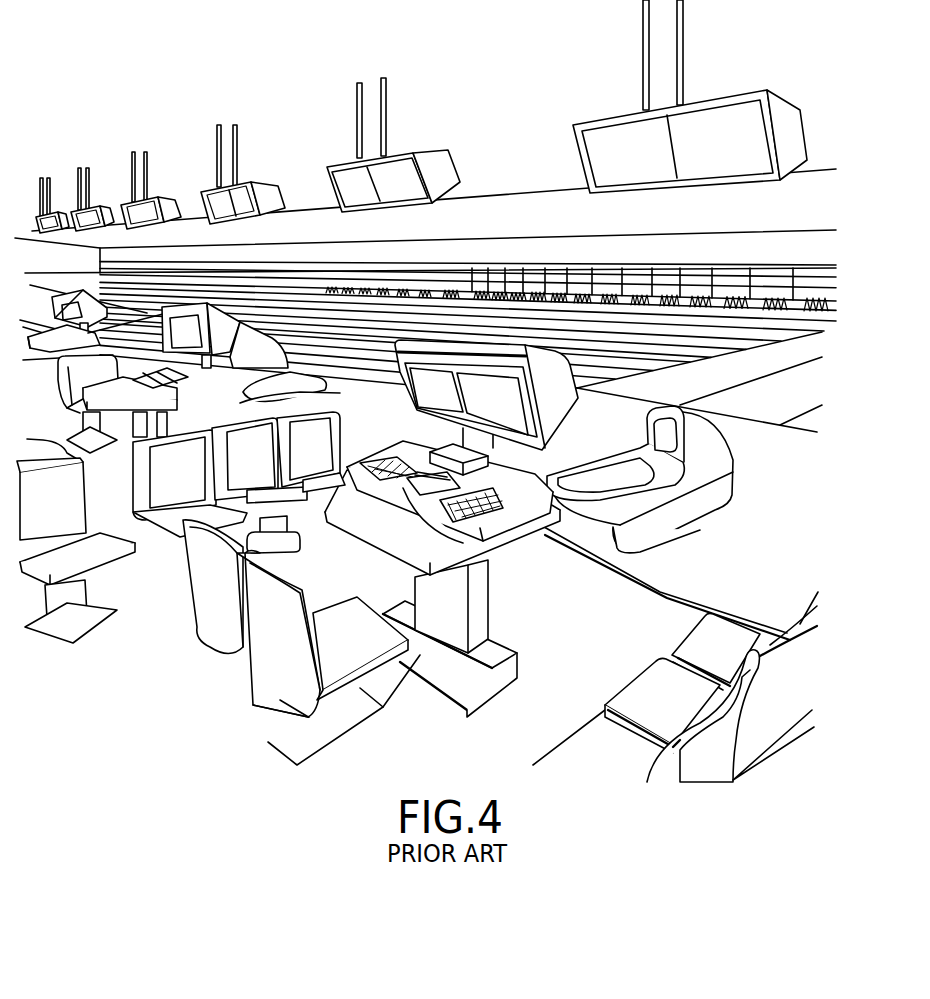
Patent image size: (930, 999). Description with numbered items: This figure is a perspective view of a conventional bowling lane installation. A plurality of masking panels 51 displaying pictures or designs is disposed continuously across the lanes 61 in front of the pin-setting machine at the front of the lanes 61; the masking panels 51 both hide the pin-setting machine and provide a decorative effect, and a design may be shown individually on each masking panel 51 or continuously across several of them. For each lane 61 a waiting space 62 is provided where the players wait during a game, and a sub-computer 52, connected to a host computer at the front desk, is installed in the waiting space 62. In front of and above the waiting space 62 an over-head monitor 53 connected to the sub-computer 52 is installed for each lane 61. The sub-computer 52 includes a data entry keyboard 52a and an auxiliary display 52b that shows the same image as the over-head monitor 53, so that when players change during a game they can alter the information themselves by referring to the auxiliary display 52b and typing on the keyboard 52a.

The masking panel 51 is at (608, 268).
The sub-computer 52 is at (484, 546).
The data entry keyboard 52a is at (380, 480).
The auxiliary display 52b is at (567, 435).
The over-head monitor 53 is at (147, 197).
The lane 61 is at (762, 413).
The waiting space 62 is at (385, 697).